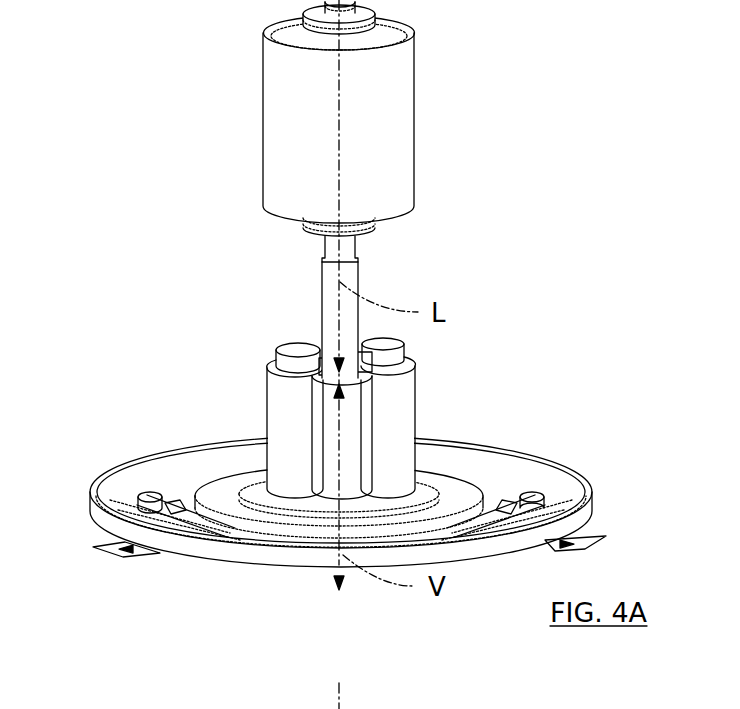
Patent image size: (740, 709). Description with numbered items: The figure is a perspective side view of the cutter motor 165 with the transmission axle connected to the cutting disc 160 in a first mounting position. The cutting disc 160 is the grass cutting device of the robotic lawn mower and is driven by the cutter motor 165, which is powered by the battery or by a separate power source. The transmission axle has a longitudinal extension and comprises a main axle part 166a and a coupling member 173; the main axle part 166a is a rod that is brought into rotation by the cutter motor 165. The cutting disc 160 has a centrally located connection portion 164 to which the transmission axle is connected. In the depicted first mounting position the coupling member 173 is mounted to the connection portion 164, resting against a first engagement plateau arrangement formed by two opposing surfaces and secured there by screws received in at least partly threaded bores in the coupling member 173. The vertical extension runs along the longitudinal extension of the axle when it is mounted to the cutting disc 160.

The cutting disc 160 is at (192, 473).
The connection portion 164 is at (393, 435).
The cutter motor 165 is at (283, 172).
The main axle part 166a is at (353, 3).
The coupling member 173 is at (313, 318).